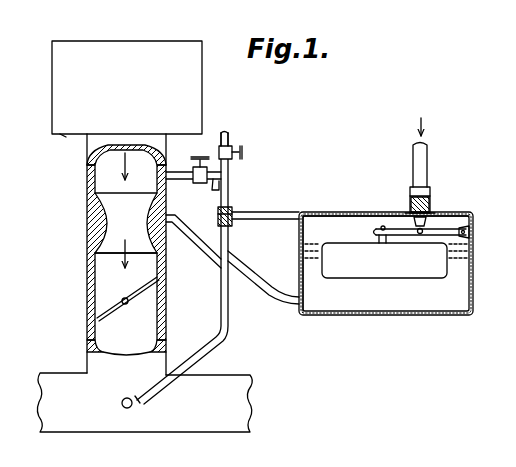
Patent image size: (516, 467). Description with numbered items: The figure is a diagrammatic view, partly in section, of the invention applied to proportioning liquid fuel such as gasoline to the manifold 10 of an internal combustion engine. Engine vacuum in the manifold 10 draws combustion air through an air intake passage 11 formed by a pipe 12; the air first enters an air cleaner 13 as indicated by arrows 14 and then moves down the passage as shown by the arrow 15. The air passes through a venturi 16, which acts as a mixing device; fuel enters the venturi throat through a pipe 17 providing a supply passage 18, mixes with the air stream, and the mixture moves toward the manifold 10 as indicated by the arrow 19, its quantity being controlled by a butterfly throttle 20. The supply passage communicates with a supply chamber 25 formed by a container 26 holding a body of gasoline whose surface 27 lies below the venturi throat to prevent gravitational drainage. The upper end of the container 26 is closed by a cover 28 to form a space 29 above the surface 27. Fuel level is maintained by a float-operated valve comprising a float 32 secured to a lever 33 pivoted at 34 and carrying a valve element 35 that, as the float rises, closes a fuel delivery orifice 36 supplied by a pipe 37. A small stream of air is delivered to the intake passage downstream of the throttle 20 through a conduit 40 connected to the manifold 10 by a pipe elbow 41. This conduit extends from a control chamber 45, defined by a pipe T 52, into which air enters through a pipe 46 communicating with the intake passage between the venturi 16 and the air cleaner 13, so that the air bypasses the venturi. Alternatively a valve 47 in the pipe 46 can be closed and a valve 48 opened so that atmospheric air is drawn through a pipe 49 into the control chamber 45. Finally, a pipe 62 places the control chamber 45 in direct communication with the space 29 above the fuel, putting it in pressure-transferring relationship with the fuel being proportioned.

The manifold 10 is at (221, 420).
The air intake passage 11 is at (84, 260).
The pipe 12 is at (87, 289).
The air cleaner 13 is at (119, 52).
The arrows 14 is at (58, 143).
The arrow 15 is at (121, 152).
The venturi 16 is at (106, 220).
The pipe 17 is at (200, 243).
The supply passage 18 is at (268, 292).
The arrow 19 is at (120, 257).
The throttle 20 is at (97, 321).
The supply chamber 25 is at (391, 263).
The container 26 is at (299, 263).
The surface 27 is at (312, 243).
The cover 28 is at (342, 212).
The space 29 is at (362, 221).
The float 32 is at (440, 266).
The lever 33 is at (466, 229).
The pivot 34 is at (472, 233).
The valve element 35 is at (432, 211).
The fuel delivery orifice 36 is at (431, 189).
The pipe 37 is at (429, 152).
The conduit 40 is at (197, 352).
The pipe elbow 41 is at (129, 409).
The control chamber 45 is at (235, 212).
The pipe 46 is at (212, 191).
The valve 47 is at (194, 183).
The valve 48 is at (233, 148).
The pipe 49 is at (226, 137).
The pipe T 52 is at (218, 216).
The pipe 62 is at (256, 221).